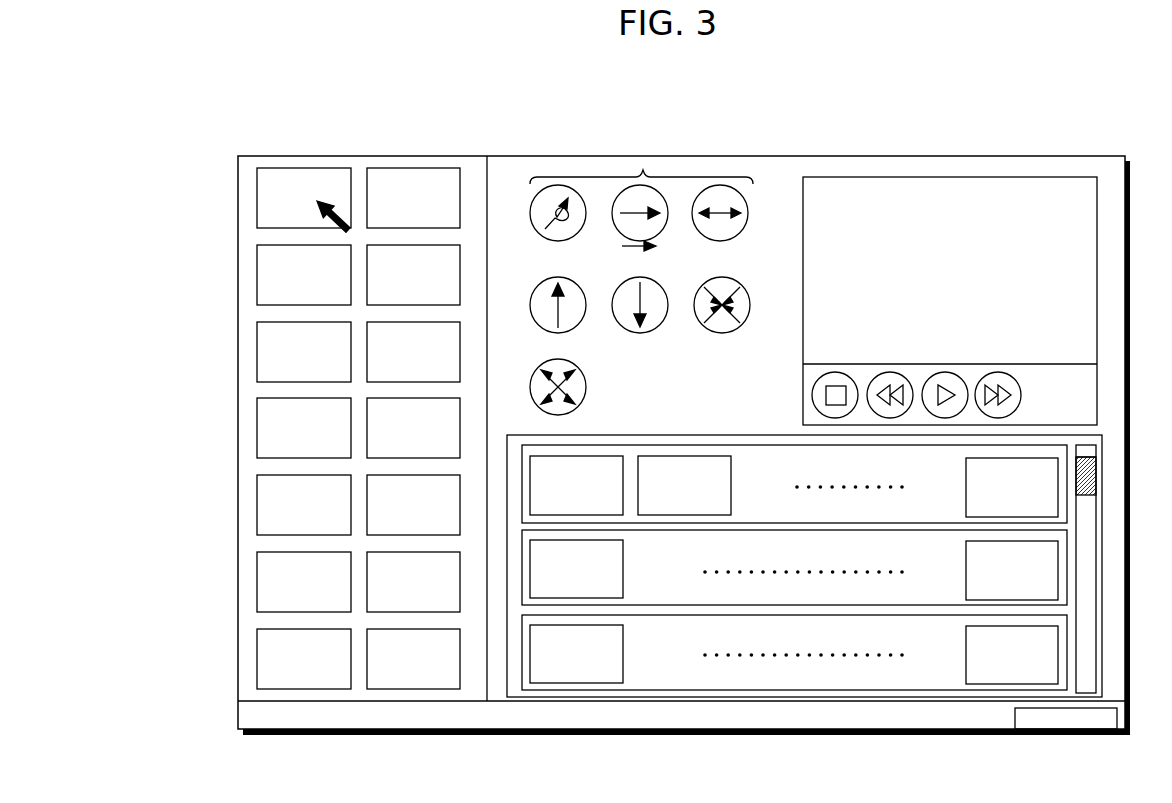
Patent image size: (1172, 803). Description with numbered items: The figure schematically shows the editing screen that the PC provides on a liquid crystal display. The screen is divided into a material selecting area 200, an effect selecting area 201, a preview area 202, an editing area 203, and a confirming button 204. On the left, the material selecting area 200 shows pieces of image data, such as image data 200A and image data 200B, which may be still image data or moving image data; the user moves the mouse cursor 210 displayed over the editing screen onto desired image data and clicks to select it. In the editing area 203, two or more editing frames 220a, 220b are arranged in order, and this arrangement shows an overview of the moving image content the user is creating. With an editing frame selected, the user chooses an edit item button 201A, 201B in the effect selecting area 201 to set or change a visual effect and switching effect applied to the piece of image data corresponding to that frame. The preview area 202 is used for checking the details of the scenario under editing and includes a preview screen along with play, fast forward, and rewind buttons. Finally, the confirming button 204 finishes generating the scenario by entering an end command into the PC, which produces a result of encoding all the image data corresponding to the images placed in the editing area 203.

The material selecting area 200 is at (250, 167).
The image data 200A is at (290, 167).
The image data 200B is at (403, 167).
The mouse cursor 210 is at (345, 230).
The effect selecting area 201 is at (692, 121).
The edit item button 201A is at (587, 223).
The edit item button 201B is at (665, 225).
The preview area 202 is at (957, 175).
The editing area 203 is at (507, 687).
The editing frame 220a is at (588, 456).
The editing frame 220b is at (693, 456).
The confirming button 204 is at (1015, 718).